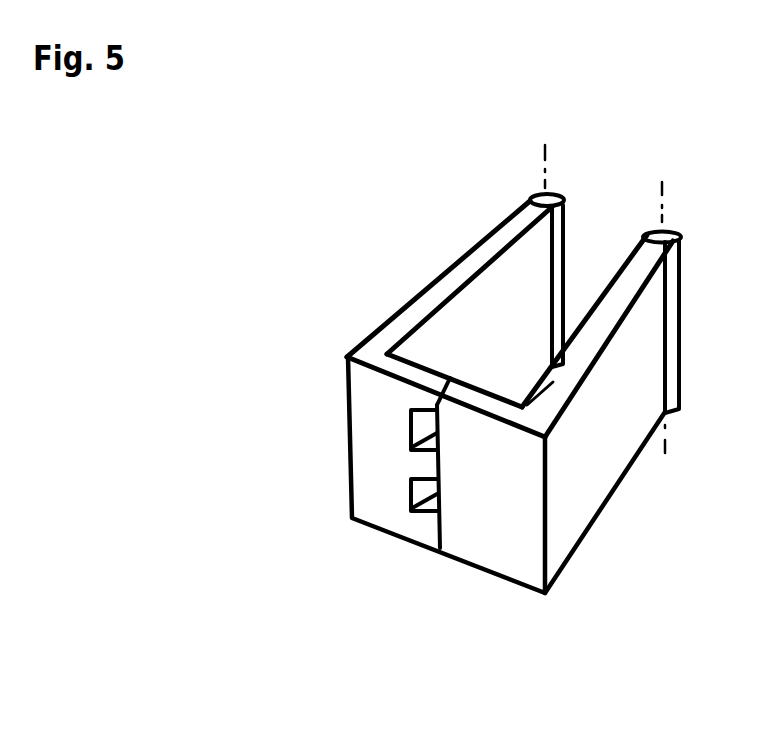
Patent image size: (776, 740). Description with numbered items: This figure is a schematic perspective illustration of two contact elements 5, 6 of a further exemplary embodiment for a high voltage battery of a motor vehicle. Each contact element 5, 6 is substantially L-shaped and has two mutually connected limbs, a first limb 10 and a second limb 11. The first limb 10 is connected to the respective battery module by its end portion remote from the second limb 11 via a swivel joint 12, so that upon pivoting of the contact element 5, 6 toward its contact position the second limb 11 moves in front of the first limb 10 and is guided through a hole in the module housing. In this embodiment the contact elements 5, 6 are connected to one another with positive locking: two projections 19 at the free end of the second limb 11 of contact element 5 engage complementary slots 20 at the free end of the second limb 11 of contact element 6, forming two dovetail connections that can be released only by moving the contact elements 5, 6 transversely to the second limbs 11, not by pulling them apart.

The contact element 5 is at (620, 494).
The contact element 6 is at (436, 269).
The first limb 10 is at (482, 255).
The second limb 11 is at (370, 413).
The swivel joint 12 is at (552, 192).
The projection 19 is at (423, 503).
The slot 20 is at (413, 488).